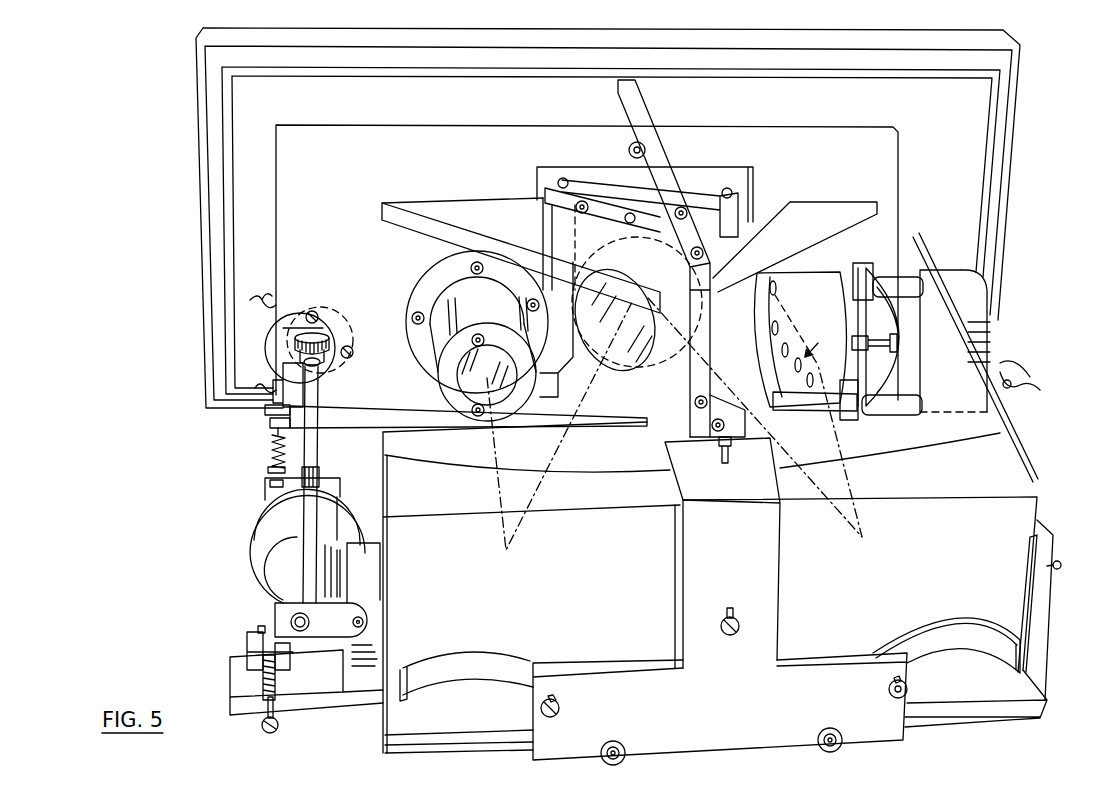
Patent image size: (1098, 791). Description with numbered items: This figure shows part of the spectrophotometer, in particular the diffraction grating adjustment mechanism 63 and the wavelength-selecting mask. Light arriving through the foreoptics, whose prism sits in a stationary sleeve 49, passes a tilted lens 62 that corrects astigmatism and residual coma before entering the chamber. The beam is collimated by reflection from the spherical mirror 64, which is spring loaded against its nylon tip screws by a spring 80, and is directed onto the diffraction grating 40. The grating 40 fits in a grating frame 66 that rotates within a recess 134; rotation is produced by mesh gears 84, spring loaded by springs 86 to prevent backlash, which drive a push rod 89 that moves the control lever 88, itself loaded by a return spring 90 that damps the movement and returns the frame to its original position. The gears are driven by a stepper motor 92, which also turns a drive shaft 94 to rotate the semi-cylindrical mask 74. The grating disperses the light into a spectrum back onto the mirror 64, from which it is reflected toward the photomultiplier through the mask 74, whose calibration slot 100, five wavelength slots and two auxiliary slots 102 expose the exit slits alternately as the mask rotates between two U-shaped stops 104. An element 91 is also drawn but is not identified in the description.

The diffraction grating 40 is at (631, 356).
The stationary sleeve 49 is at (452, 303).
The tilted lens 62 is at (437, 357).
The diffraction grating adjustment mechanism 63 is at (216, 505).
The spherical mirror 64 is at (977, 437).
The grating frame 66 is at (737, 220).
The semi-cylindrical mask 74 is at (817, 277).
The spring 80 is at (508, 654).
The mesh gears 84 is at (229, 577).
The springs 86 is at (273, 712).
The control lever 88 is at (372, 403).
The push rod 89 is at (320, 450).
The spring 90 is at (270, 448).
The knob 91 is at (283, 577).
The stepper motor 92 is at (983, 322).
The drive shaft 94 is at (889, 338).
The calibration slot 100 is at (783, 300).
The auxiliary slots 102 is at (822, 411).
The stops 104 is at (858, 276).
The recess 134 is at (702, 167).